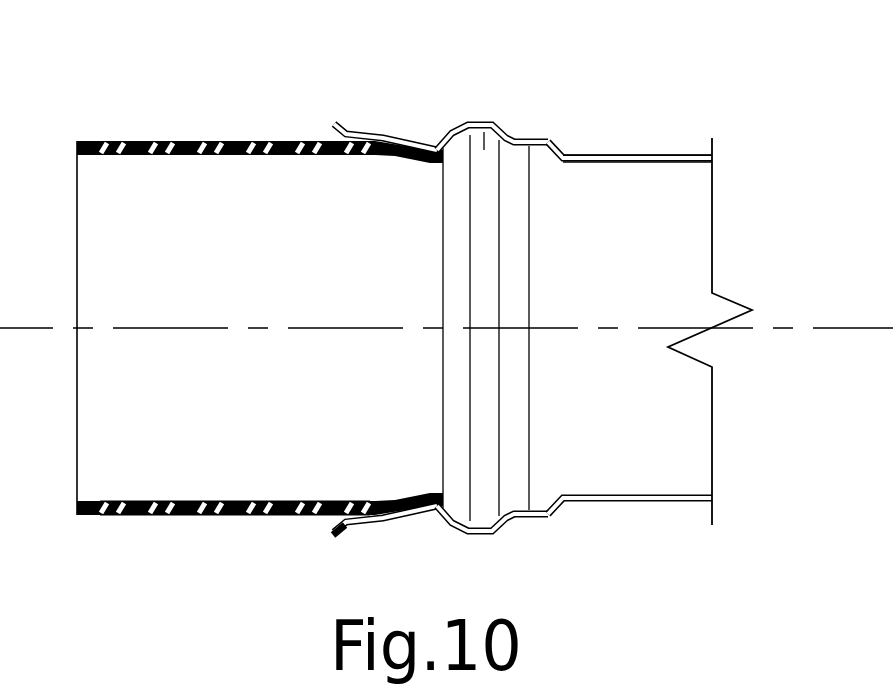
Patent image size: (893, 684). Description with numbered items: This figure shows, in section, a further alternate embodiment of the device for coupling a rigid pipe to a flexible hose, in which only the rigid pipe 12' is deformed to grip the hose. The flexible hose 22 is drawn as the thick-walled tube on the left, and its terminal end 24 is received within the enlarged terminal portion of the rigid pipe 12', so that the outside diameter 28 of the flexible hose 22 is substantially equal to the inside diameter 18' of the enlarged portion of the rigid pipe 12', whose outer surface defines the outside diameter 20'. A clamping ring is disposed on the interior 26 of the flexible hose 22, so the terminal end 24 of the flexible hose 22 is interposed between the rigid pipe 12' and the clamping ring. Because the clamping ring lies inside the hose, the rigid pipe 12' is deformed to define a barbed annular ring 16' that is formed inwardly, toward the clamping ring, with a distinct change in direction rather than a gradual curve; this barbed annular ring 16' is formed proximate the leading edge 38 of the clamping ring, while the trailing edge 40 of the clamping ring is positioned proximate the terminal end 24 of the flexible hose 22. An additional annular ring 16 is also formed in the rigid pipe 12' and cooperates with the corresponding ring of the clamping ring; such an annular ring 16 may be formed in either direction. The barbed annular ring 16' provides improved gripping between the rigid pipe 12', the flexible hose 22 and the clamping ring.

The rigid pipe 12' is at (557, 307).
The annular ring 16 is at (492, 286).
The barbed annular ring 16' is at (386, 284).
The inside diameter 18' is at (672, 196).
The outside diameter 20' is at (667, 113).
The flexible hose 22 is at (112, 524).
The terminal end 24 is at (545, 521).
The interior 26 is at (176, 501).
The outside diameter 28 is at (207, 515).
The leading edge 38 is at (443, 245).
The trailing edge 40 is at (530, 272).